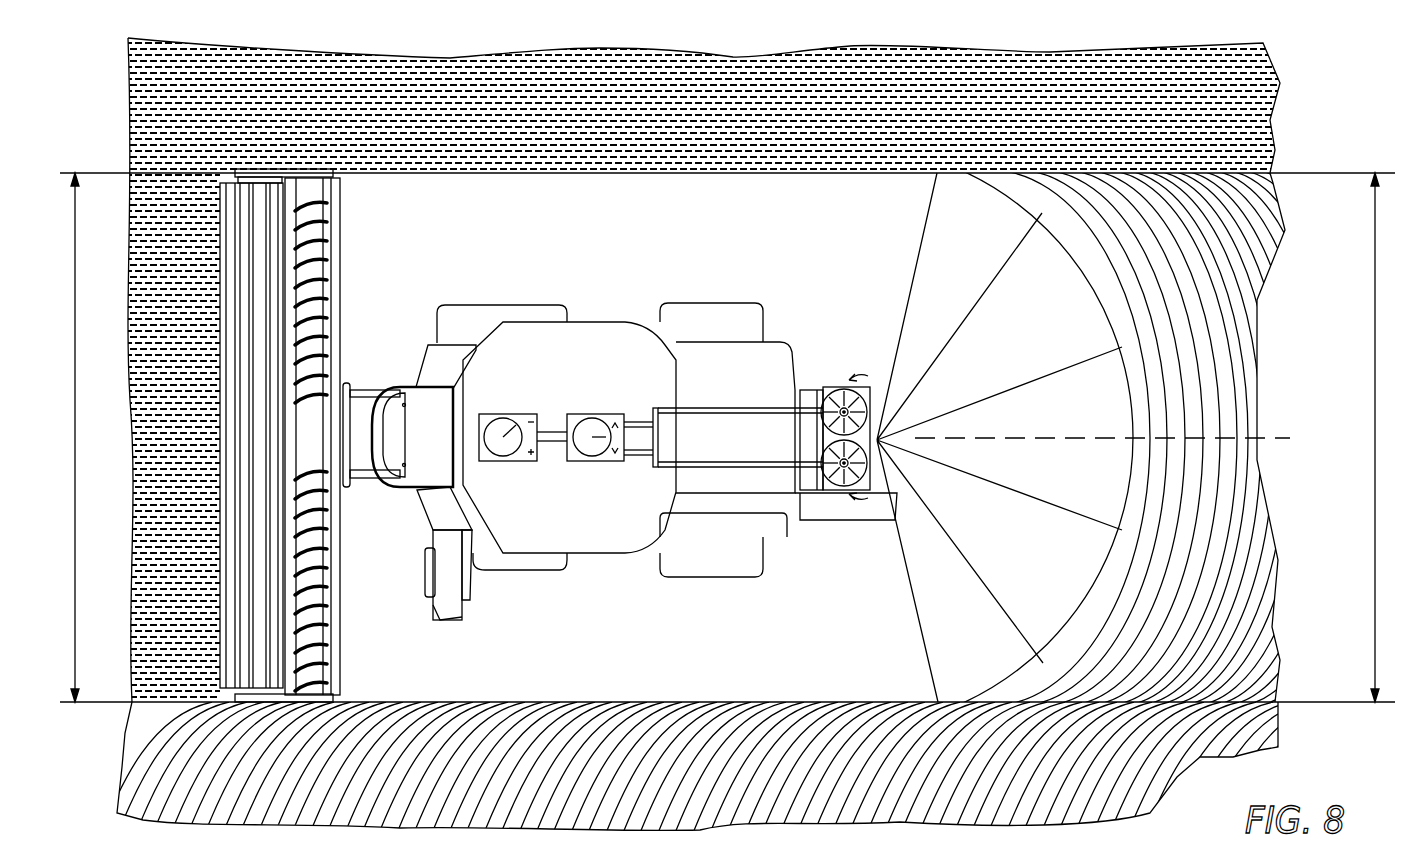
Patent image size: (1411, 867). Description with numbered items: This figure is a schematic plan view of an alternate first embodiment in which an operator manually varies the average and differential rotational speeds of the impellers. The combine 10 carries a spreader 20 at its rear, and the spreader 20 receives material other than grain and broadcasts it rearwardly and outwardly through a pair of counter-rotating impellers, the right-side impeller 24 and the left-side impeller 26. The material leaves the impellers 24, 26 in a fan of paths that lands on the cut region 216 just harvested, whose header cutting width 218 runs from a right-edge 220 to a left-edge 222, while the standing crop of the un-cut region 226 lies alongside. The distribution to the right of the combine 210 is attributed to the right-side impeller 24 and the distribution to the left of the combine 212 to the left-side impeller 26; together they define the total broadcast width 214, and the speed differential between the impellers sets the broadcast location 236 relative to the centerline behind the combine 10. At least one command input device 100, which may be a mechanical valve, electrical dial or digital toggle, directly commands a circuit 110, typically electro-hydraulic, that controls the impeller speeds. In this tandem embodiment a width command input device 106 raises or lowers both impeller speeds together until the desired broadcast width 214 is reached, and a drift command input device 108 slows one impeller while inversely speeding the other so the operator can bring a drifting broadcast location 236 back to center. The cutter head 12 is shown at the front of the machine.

The combine 10 is at (671, 435).
The cutter head 12 is at (343, 640).
The spreader 20 is at (880, 442).
The right-side impeller 24 is at (842, 390).
The left-side impeller 26 is at (842, 485).
The command input device 100 is at (586, 370).
The width command input device 106 is at (505, 428).
The drift command input device 108 is at (588, 452).
The circuit 110 is at (722, 390).
The right-side MOG distribution width 210 is at (1250, 197).
The left-side MOG distribution width 212 is at (1240, 648).
The broadcast width 214 is at (1376, 437).
The cut region 216 is at (646, 647).
The header cutting width 218 is at (79, 437).
The right-edge 220 is at (108, 172).
The left-edge 222 is at (106, 703).
The un-cut region 226 is at (580, 75).
The broadcast location 236 is at (1270, 440).